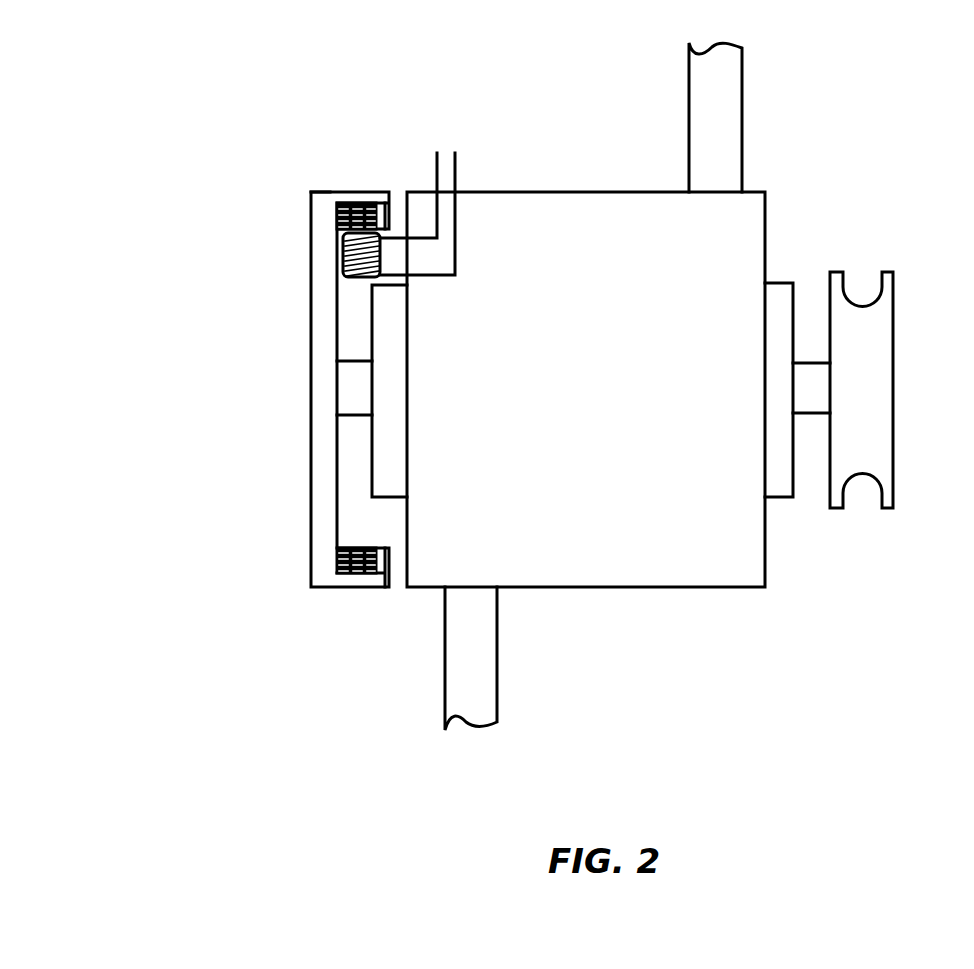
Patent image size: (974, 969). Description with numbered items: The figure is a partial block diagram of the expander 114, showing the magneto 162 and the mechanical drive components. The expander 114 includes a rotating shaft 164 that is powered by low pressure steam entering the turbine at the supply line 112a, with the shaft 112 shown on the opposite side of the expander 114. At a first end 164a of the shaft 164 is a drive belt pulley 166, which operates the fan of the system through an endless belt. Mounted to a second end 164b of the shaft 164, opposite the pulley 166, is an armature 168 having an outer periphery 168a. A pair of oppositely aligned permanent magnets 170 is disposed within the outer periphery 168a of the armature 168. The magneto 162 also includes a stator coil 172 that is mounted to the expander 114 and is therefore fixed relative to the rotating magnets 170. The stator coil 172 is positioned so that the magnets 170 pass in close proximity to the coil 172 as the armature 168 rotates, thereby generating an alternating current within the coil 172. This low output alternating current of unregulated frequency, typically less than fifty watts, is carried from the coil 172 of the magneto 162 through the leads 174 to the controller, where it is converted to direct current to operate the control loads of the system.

The supply line 112 is at (445, 663).
The supply line 112a is at (743, 128).
The expander 114 is at (627, 593).
The magneto 162 is at (331, 327).
The rotating shaft 164 is at (808, 348).
The first end 164a is at (813, 417).
The second end 164b is at (353, 415).
The drive belt pulley 166 is at (893, 342).
The armature 168 is at (263, 375).
The outer periphery 168a is at (325, 190).
The permanent magnets 170 is at (337, 222).
The stator coil 172 is at (343, 258).
The leads 174 is at (447, 153).